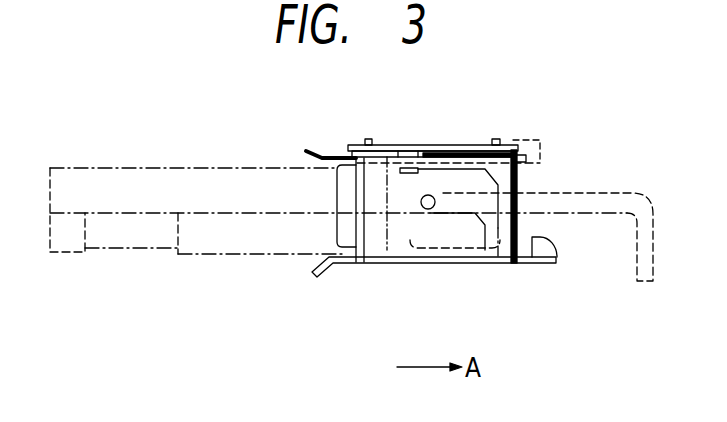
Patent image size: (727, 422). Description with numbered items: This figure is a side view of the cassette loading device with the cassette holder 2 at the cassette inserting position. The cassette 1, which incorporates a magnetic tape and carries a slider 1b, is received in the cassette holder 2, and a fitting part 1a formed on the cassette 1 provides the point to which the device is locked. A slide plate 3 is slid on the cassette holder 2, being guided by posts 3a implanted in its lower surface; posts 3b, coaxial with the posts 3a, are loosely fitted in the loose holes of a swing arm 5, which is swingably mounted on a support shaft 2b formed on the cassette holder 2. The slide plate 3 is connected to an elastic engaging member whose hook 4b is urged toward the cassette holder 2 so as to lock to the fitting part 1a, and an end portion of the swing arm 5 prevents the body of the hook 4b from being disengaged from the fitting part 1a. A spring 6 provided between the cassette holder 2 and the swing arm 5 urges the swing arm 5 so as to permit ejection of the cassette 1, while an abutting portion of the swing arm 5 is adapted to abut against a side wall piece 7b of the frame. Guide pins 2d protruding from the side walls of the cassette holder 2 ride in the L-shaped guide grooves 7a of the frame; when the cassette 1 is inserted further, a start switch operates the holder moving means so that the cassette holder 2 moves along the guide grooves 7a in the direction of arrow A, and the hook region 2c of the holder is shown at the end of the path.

The cassette 1 is at (112, 183).
The fitting part 1a is at (405, 173).
The slider 1b is at (236, 240).
The cassette holder 2 is at (507, 263).
The support shafts 2b is at (493, 140).
The hook portion of holder 2c is at (537, 240).
The guide pins 2d is at (428, 209).
The slide plate 3 is at (350, 157).
The posts 3a is at (358, 250).
The posts 3b is at (367, 140).
The hook 4b is at (403, 150).
The swing arm 5 is at (440, 145).
The spring 6 is at (527, 153).
The guide grooves 7a is at (615, 193).
The side wall piece 7b is at (524, 140).